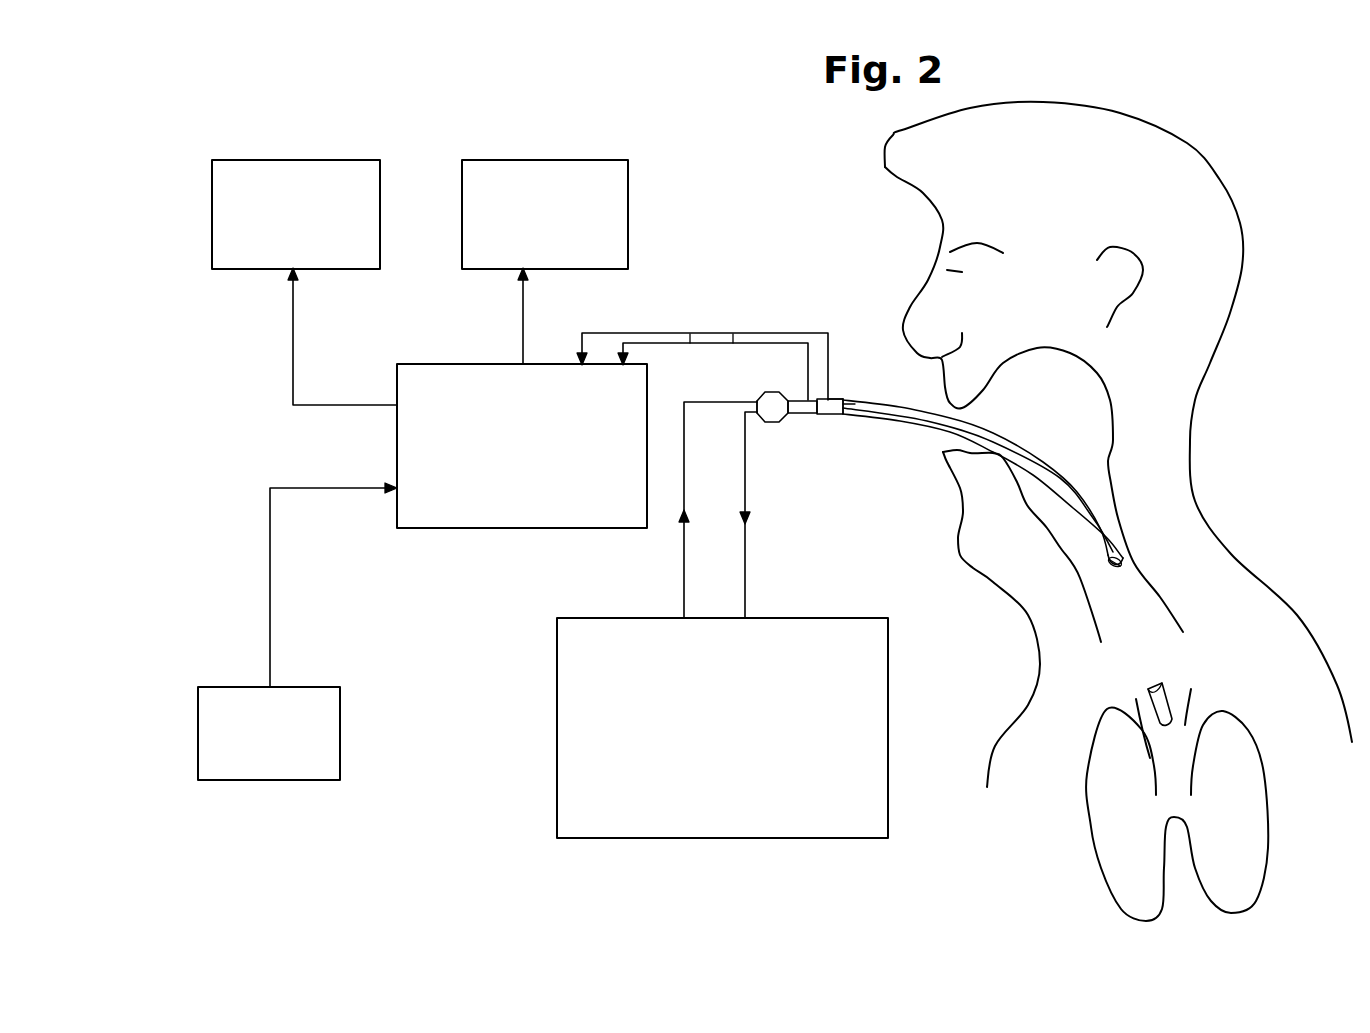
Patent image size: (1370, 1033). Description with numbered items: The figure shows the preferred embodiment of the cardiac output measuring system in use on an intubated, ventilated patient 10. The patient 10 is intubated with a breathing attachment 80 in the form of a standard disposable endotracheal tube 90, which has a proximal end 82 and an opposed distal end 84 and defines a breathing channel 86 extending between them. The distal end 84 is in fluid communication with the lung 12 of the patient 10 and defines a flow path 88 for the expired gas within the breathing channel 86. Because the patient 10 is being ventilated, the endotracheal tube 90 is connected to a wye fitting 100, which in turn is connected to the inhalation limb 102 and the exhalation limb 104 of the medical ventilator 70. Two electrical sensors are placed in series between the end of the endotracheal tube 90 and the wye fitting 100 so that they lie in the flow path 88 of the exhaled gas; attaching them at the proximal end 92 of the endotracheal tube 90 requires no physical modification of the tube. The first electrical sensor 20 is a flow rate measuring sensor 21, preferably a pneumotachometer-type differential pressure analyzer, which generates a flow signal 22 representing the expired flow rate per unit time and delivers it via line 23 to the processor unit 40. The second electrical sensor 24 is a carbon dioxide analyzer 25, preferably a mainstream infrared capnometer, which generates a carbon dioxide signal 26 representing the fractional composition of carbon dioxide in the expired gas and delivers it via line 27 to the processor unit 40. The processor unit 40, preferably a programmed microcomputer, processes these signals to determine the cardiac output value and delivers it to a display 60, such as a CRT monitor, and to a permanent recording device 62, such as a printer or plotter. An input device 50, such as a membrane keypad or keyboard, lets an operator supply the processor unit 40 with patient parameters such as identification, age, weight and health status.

The patient 10 is at (1198, 398).
The lung 12 is at (1268, 815).
The first electrical sensor 20 is at (795, 419).
The flow rate measuring sensor 21 is at (800, 420).
The flow signal 22 is at (737, 347).
The line 23 is at (694, 347).
The second electrical sensor 24 is at (843, 399).
The carbon dioxide analyzer 25 is at (826, 419).
The carbon dioxide signal 26 is at (745, 326).
The line 27 is at (758, 333).
The processor unit 40 is at (437, 528).
The input device 50 is at (300, 687).
The display 60 is at (327, 160).
The permanent recording device 62 is at (573, 160).
The medical ventilator 70 is at (557, 740).
The breathing attachment 80 is at (905, 425).
The proximal end 82 is at (845, 419).
The distal end 84 is at (1187, 692).
The breathing channel 86 is at (1115, 577).
The flow path 88 is at (1114, 584).
The endotracheal tube 90 is at (1003, 433).
The proximal end of the endotracheal tube 92 is at (848, 400).
The wye fitting 100 is at (757, 405).
The inhalation limb 102 is at (684, 543).
The exhalation limb 104 is at (745, 543).